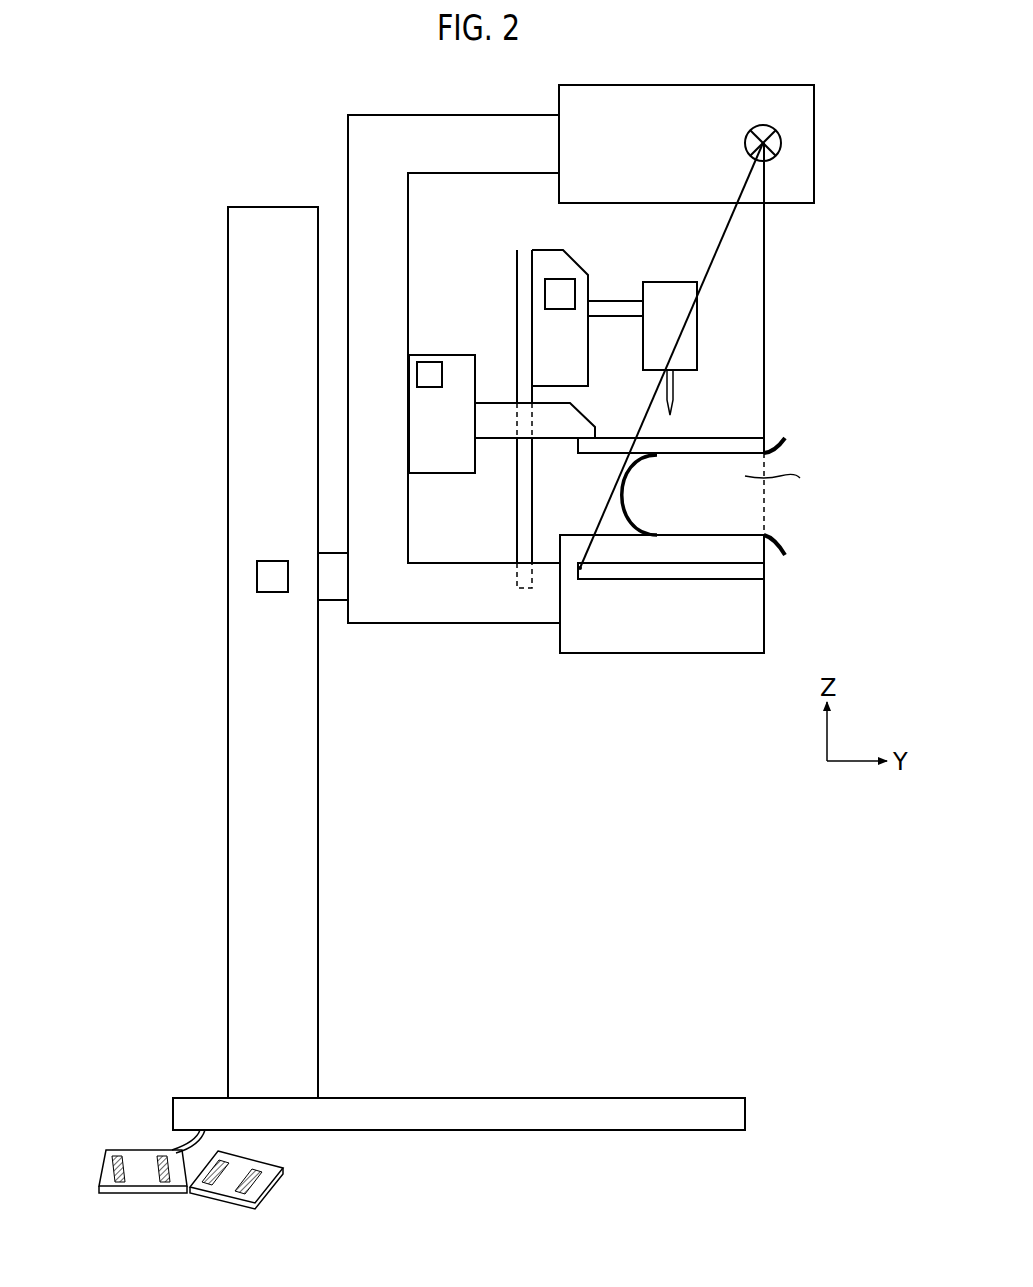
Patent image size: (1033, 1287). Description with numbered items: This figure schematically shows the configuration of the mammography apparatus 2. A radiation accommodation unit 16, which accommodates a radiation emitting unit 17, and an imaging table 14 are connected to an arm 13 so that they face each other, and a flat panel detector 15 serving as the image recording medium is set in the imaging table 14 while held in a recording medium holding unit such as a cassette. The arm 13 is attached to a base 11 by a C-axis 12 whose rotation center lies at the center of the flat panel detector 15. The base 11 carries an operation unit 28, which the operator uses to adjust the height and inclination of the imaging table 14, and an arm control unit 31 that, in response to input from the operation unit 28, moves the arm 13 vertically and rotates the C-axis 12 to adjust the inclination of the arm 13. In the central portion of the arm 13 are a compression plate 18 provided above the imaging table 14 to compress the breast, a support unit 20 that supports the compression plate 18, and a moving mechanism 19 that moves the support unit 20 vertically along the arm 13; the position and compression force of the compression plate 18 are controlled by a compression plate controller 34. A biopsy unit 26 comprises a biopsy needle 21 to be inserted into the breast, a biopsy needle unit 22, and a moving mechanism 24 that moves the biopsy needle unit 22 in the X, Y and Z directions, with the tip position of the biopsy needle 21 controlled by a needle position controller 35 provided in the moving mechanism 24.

The mammography apparatus 2 is at (225, 160).
The base 11 is at (237, 270).
The C-axis 12 is at (333, 602).
The arm 13 is at (396, 115).
The imaging table 14 is at (722, 655).
The flat panel detector 15 is at (755, 572).
The radiation accommodation unit 16 is at (814, 103).
The radiation emitting unit 17 is at (781, 147).
The compression plate 18 is at (732, 438).
The moving mechanism 19 is at (430, 475).
The support unit 20 is at (555, 422).
The biopsy needle 21 is at (676, 390).
The biopsy needle unit 22 is at (716, 310).
The moving mechanism 24 is at (570, 251).
The biopsy unit 26 is at (545, 236).
The operation unit 28 is at (132, 1150).
The arm control unit 31 is at (257, 572).
The compression plate controller 34 is at (430, 362).
The needle position controller 35 is at (560, 310).